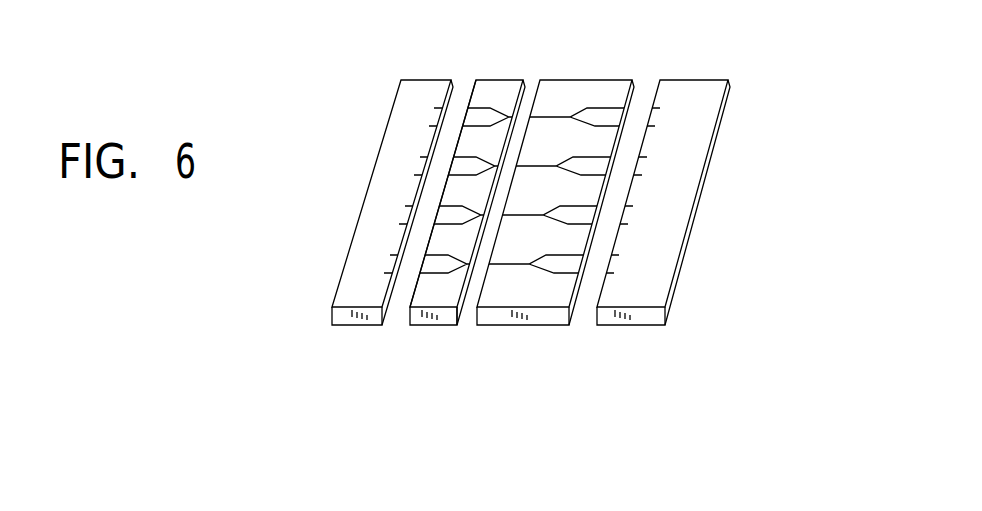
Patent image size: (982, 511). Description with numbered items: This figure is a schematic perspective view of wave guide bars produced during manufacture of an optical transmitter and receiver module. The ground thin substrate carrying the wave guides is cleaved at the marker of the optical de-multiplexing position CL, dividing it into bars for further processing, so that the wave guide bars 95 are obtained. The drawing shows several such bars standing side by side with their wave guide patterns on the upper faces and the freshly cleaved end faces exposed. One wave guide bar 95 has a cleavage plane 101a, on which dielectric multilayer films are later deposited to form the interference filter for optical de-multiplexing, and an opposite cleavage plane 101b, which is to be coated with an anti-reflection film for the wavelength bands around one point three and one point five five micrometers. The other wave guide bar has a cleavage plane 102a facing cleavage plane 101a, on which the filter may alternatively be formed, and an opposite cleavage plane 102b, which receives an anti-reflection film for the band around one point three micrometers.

The wave guide bar 95 is at (487, 88).
The cleavage plane 102a is at (535, 88).
The cleavage plane 102b is at (643, 85).
The cleavage plane 101a is at (463, 302).
The cleavage plane 101b is at (410, 290).
The optical de-multiplexing position to be cleaved CL is at (450, 325).